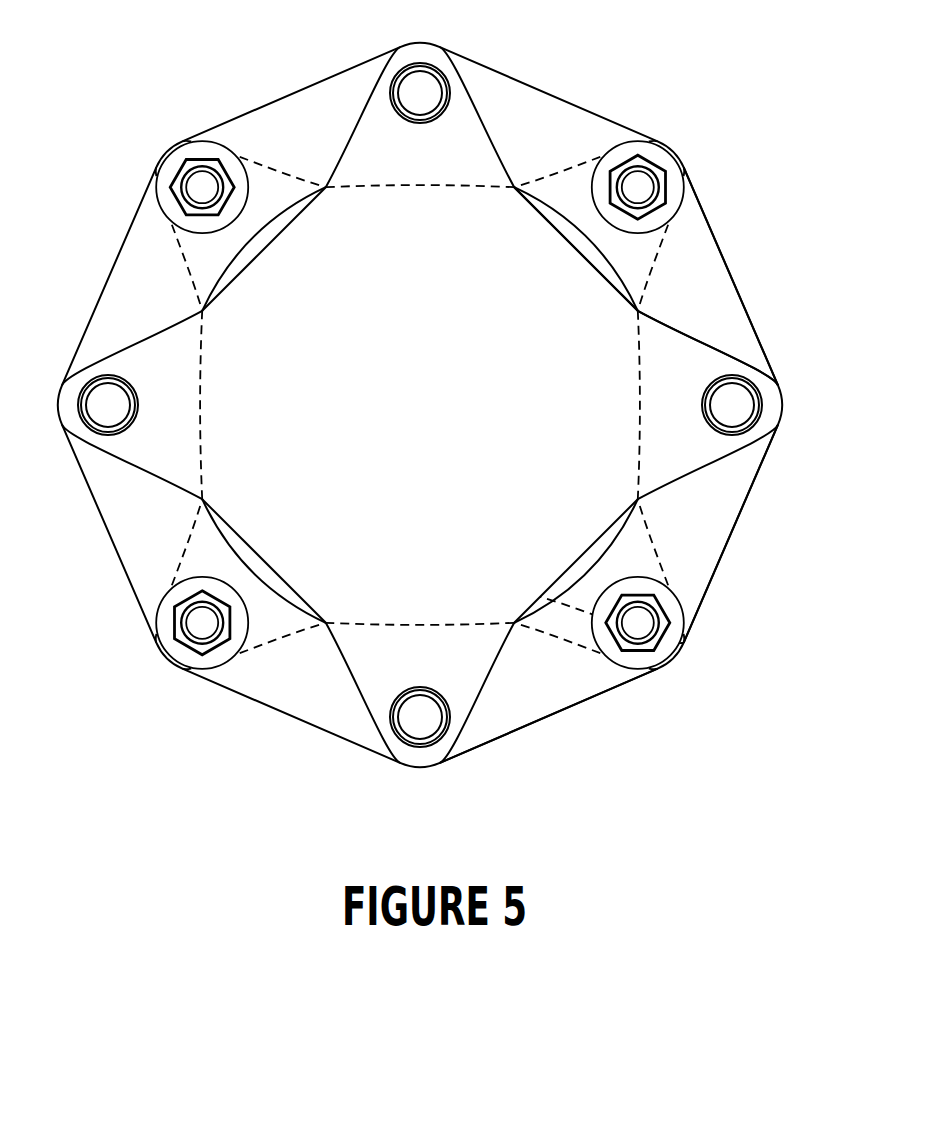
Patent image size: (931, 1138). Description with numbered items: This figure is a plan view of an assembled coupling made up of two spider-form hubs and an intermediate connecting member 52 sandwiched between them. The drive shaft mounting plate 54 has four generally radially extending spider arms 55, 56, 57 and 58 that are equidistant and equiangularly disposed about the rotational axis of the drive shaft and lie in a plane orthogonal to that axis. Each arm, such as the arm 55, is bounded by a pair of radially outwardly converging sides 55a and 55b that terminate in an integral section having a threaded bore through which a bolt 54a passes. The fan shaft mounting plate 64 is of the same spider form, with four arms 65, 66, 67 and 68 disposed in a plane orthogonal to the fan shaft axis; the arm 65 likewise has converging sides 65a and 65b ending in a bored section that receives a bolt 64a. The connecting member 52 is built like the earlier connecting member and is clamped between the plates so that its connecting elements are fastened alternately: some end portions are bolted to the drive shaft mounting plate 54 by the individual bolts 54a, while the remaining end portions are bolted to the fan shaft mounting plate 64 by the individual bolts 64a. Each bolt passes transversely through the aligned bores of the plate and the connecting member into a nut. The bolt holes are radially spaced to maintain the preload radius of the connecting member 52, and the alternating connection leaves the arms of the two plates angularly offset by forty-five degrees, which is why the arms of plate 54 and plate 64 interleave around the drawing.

The connecting member 52 is at (528, 125).
The drive shaft mounting plate 54 is at (682, 322).
The bolt 54a is at (736, 404).
The spider arm 55 is at (680, 438).
The converging side 55a is at (759, 465).
The converging side 55b is at (733, 353).
The spider arm 56 is at (458, 673).
The spider arm 57 is at (158, 363).
The spider arm 58 is at (380, 148).
The fan shaft mounting plate 64 is at (680, 242).
The bolt 64a is at (640, 625).
The spider arm 65 is at (570, 617).
The converging side 65a is at (610, 657).
The converging side 65b is at (672, 583).
The spider arm 66 is at (303, 640).
The spider arm 67 is at (177, 248).
The spider arm 68 is at (582, 157).